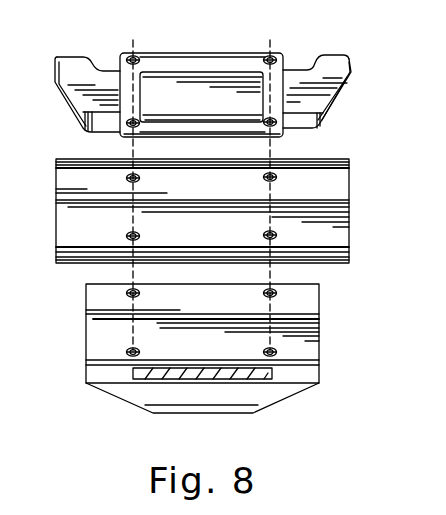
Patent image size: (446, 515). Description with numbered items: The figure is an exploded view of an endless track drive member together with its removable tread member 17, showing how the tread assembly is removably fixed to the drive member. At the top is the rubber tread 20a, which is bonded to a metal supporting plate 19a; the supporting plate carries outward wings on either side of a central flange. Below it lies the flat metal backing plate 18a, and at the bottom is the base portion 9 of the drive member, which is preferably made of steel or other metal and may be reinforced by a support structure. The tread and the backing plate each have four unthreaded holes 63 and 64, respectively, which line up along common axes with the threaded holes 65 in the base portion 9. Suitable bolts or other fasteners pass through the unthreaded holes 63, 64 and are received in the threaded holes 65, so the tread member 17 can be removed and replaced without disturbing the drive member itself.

The base portion 9 is at (320, 332).
The removable tread member 17 is at (348, 118).
The metal backing plate 18a is at (320, 158).
The metal supporting plate 19a is at (352, 93).
The rubber tread 20a is at (331, 53).
The unthreaded holes 63 is at (301, 22).
The unthreaded holes 64 is at (133, 172).
The threaded holes 65 is at (126, 295).